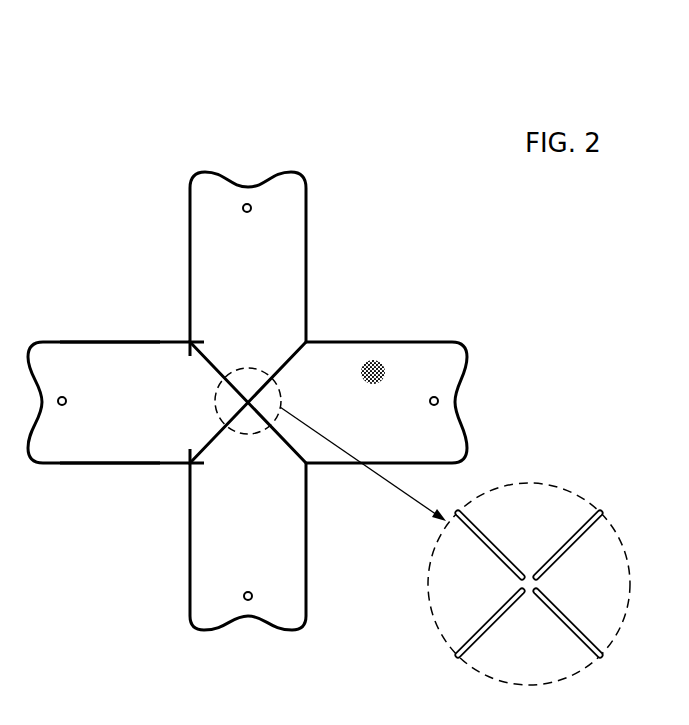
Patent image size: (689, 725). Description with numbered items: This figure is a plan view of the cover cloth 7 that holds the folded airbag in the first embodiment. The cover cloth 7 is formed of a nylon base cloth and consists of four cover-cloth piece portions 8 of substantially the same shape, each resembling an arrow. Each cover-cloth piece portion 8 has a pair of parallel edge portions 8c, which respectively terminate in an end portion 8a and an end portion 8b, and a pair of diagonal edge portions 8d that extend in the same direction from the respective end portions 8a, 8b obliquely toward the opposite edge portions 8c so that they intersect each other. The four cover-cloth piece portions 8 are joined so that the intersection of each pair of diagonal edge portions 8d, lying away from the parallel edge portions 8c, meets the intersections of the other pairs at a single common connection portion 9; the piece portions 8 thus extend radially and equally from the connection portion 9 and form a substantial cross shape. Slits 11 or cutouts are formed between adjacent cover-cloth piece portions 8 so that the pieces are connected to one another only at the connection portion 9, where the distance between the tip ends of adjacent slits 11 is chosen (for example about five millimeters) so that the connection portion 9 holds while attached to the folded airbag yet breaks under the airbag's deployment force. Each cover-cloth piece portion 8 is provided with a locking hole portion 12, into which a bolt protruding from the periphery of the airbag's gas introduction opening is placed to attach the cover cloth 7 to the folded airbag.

The cover cloth 7 is at (269, 372).
The cover-cloth piece portion 8 is at (332, 347).
The end portion 8a is at (189, 463).
The end portion 8b is at (190, 344).
The parallel edge portion 8c is at (110, 342).
The diagonal edge portion 8d is at (214, 366).
The connection portion 9 is at (522, 570).
The slit 11 is at (456, 660).
The locking hole portion 12 is at (62, 396).